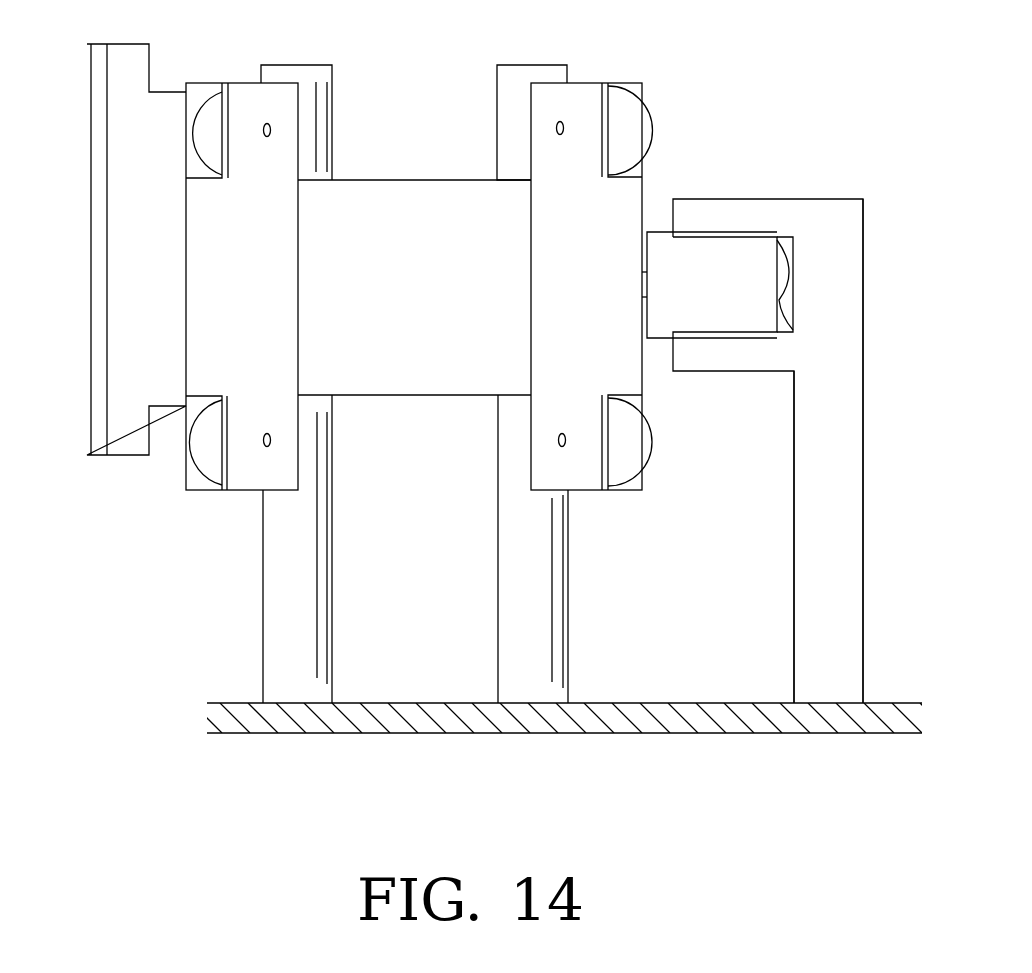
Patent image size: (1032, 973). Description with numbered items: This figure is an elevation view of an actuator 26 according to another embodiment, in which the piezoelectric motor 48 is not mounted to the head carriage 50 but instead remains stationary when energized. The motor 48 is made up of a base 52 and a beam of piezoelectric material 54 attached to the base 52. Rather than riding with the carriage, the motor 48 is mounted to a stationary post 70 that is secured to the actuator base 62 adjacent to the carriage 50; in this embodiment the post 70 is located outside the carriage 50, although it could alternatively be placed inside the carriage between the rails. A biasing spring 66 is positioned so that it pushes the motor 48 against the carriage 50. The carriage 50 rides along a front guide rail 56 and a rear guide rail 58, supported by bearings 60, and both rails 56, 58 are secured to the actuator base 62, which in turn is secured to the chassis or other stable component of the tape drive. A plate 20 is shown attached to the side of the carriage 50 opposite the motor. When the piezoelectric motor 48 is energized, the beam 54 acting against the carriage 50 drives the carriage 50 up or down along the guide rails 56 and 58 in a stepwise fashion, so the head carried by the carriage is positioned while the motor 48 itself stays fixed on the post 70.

The plate 20 is at (86, 128).
The actuator 26 is at (820, 165).
The piezoelectric motor 48 is at (758, 252).
The carriage 50 is at (413, 178).
The base 52 is at (660, 322).
The beam of piezoelectric material 54 is at (647, 280).
The front guide rail 56 is at (292, 65).
The rear guide rail 58 is at (527, 63).
The bearings 60 is at (210, 102).
The actuator base 62 is at (670, 702).
The biasing spring 66 is at (788, 303).
The stationary post 70 is at (846, 437).